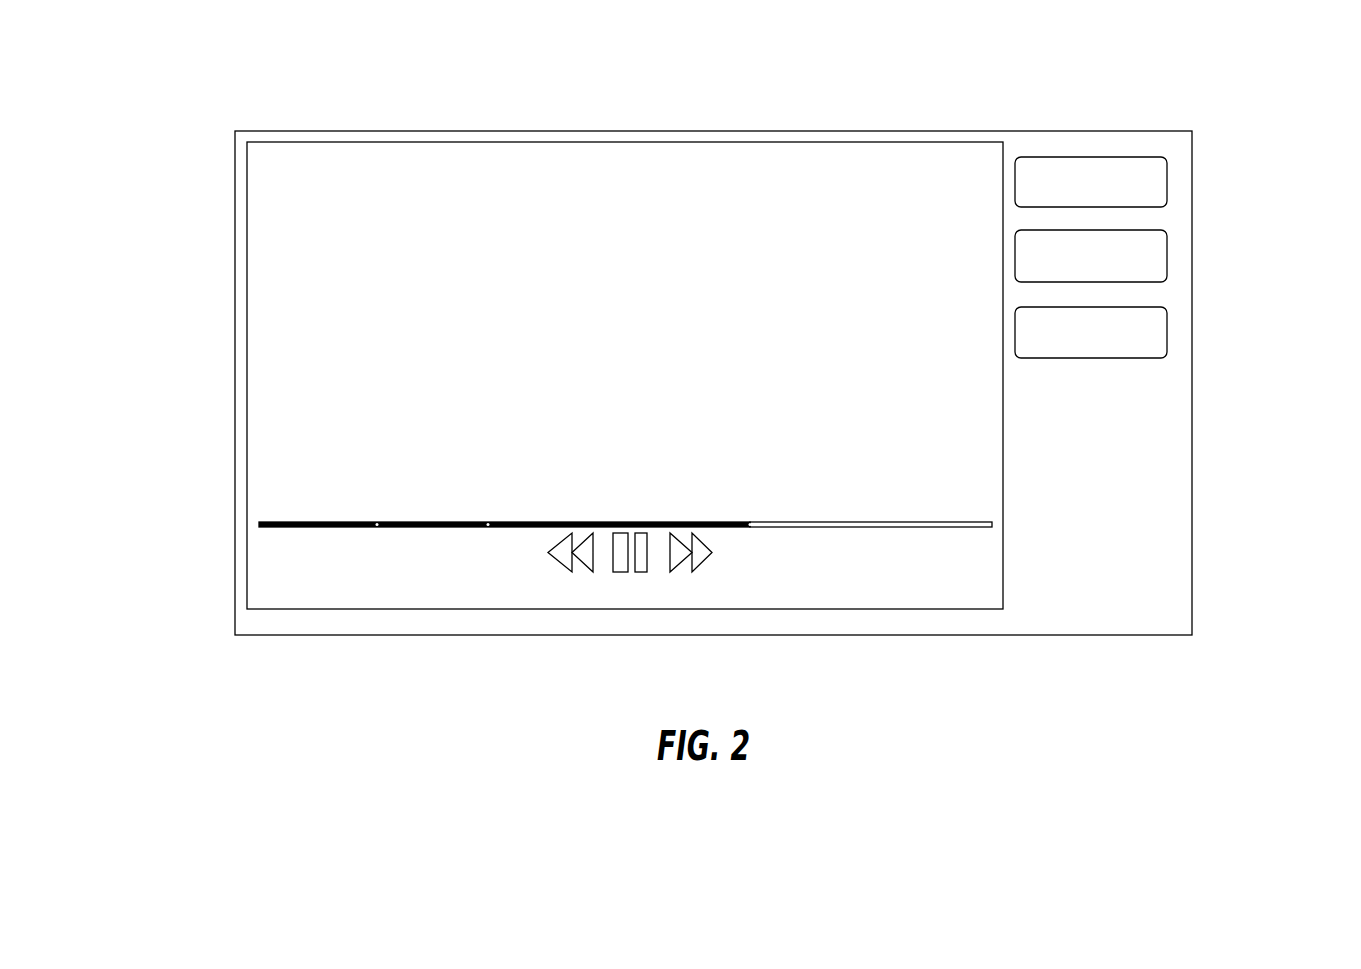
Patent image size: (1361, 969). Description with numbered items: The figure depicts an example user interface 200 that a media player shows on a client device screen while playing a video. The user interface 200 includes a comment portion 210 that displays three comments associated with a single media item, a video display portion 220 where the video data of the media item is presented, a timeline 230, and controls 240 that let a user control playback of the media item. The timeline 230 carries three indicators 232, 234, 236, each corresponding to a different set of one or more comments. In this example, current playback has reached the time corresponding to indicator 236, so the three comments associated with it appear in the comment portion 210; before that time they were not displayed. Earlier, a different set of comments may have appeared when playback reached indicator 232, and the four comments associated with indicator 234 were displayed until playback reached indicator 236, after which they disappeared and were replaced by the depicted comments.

The user interface 200 is at (400, 70).
The comment portion 210 is at (1195, 358).
The video display portion 220 is at (390, 322).
The timeline 230 is at (317, 518).
The indicator 232 is at (367, 532).
The indicator 234 is at (483, 532).
The indicator 236 is at (757, 532).
The controls 240 is at (610, 593).